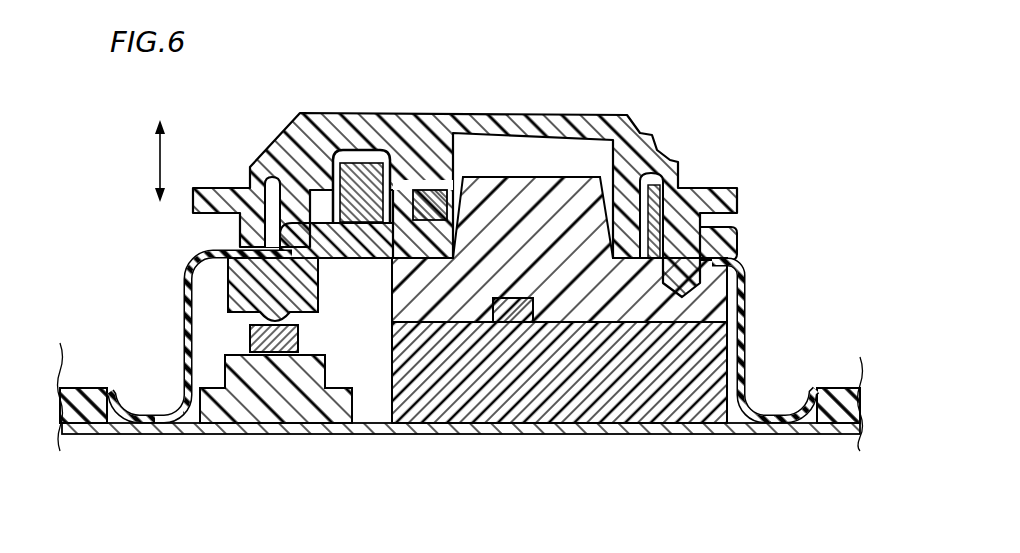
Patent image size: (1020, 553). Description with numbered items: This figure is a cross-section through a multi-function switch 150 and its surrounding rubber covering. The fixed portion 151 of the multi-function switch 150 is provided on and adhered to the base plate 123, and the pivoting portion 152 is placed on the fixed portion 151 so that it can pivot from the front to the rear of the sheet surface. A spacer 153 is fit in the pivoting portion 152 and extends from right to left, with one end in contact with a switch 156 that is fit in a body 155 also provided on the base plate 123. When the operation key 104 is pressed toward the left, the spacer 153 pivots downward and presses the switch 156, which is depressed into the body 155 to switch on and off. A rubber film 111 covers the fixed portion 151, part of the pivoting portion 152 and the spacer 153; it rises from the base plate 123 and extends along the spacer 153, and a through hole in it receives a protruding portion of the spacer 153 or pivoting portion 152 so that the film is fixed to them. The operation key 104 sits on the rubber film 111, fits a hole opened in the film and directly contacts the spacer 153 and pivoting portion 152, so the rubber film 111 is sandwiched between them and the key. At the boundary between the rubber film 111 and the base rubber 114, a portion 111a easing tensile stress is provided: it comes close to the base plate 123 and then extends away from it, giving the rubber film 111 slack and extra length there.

The operation key 104 is at (382, 112).
The rubber film 111 is at (430, 188).
The portion easing tensile stress 111a is at (163, 407).
The base rubber 114 is at (70, 388).
The base plate 123 is at (809, 434).
The multi-function switch 150 is at (559, 349).
The fixed portion 151 is at (580, 373).
The pivoting portion 152 is at (640, 295).
The spacer 153 is at (263, 292).
The body 155 is at (278, 398).
The switch 156 is at (247, 340).